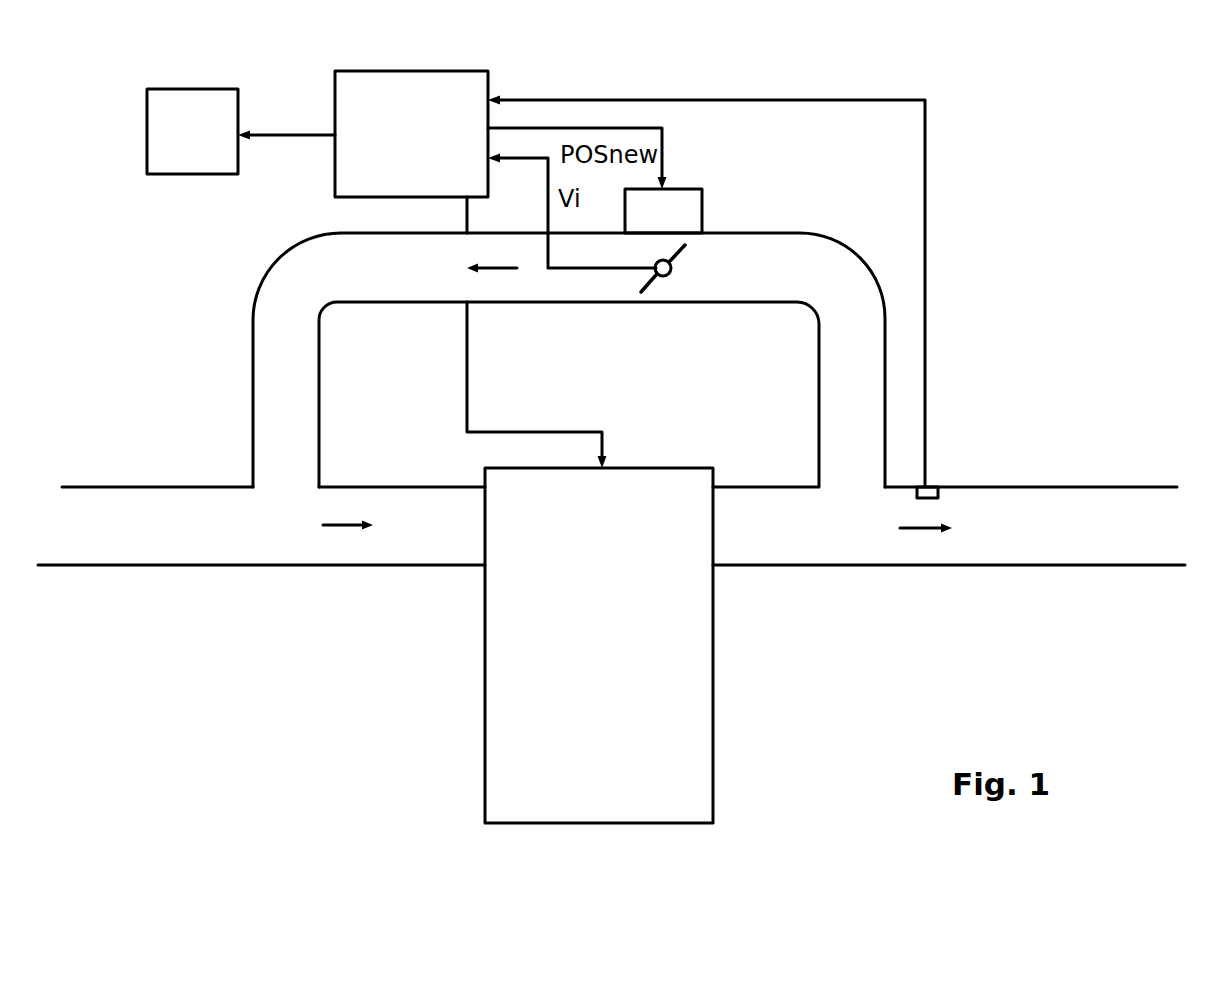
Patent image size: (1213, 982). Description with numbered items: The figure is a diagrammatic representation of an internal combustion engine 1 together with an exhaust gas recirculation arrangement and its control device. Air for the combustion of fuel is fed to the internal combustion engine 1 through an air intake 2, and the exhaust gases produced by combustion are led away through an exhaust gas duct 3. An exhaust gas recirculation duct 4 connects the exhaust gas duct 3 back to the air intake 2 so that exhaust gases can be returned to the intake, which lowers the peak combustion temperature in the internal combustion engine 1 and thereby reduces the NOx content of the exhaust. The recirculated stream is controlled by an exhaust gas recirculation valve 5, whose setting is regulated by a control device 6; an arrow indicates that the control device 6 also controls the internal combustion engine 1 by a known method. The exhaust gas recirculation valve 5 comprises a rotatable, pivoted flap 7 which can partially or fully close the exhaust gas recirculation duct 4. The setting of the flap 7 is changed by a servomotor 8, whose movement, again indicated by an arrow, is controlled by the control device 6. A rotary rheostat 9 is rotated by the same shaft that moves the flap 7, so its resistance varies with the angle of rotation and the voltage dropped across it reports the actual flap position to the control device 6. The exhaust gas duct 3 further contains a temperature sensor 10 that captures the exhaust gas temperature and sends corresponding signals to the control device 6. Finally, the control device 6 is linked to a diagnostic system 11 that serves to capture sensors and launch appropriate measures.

The internal combustion engine 1 is at (520, 645).
The air intake 2 is at (261, 581).
The exhaust gas duct 3 is at (949, 585).
The exhaust gas recirculation duct 4 is at (607, 339).
The exhaust gas recirculation valve 5 is at (811, 141).
The control device 6 is at (477, 120).
The flap 7 is at (693, 328).
The servomotor 8 is at (707, 150).
The rotary rheostat 9 is at (695, 307).
The temperature sensor 10 is at (957, 467).
The diagnostic system 11 is at (224, 99).